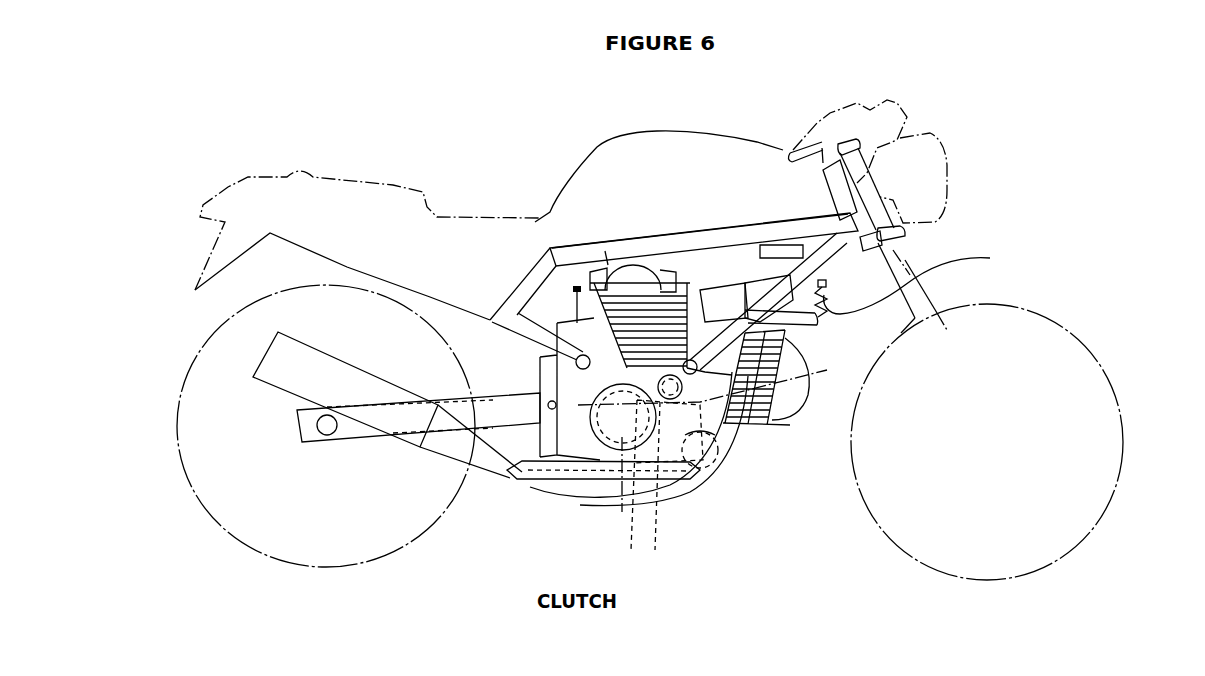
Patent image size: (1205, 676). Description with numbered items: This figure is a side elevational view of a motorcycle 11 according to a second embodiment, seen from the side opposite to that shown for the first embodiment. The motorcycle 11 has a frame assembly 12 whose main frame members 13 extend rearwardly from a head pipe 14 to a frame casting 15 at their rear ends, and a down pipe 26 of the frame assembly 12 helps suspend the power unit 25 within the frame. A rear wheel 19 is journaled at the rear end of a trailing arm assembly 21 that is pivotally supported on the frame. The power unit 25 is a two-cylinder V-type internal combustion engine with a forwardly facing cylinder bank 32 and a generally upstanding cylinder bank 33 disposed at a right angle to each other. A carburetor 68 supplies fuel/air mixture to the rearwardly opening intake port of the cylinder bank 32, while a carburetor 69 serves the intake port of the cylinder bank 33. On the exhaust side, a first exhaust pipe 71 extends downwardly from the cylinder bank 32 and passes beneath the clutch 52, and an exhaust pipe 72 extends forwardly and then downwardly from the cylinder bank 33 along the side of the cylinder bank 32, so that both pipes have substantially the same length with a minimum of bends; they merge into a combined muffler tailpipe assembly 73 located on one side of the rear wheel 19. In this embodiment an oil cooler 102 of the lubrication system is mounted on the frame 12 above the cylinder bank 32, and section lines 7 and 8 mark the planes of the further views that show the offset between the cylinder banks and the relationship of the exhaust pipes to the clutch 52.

The section line 7- 7 is at (585, 388).
The section line 8- 8 is at (615, 442).
The motorcycle 11 is at (653, 126).
The frame assembly 12 is at (715, 222).
The main frame members 13 is at (754, 229).
The head pipe 14 is at (830, 183).
The frame casting 15 is at (638, 608).
The rear wheel 19 is at (238, 543).
The trailing arm assembly 21 is at (335, 442).
The power unit 25 is at (808, 439).
The down pipe 26 is at (824, 250).
The forwardly facing cylinder bank 32 is at (769, 425).
The upstanding cylinder bank 33 is at (557, 322).
The clutch mechanism 52 is at (597, 587).
The carburetor 68 is at (727, 293).
The carburetor 69 is at (517, 310).
The first exhaust pipe 71 is at (803, 557).
The exhaust pipe 72 is at (702, 468).
The combined muffler tailpipe assembly 73 is at (277, 387).
The oil cooler 102 is at (1068, 261).